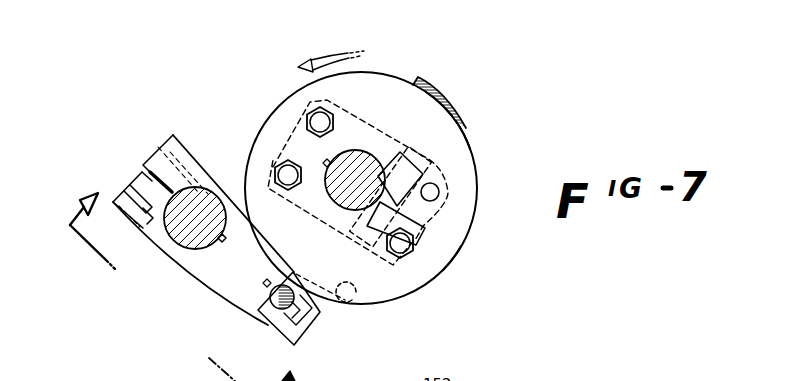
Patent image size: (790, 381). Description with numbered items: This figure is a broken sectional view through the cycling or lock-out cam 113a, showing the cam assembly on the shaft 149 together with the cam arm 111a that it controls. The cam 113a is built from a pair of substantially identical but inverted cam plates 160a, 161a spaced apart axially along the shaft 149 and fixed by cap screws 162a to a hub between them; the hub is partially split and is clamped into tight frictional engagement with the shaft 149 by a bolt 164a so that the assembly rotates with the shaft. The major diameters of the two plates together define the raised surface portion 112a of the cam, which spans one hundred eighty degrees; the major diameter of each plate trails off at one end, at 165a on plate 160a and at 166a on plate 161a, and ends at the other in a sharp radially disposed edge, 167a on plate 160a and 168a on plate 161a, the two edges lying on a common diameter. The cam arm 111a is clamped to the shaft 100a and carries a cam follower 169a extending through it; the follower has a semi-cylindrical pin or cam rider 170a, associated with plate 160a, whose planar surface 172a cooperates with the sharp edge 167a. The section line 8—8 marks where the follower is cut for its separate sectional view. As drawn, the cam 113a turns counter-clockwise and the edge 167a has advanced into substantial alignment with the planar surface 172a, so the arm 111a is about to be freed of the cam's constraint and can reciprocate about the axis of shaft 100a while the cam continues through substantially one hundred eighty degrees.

The section line 8- 8 is at (67, 237).
The shaft 100a is at (203, 191).
The cam arm 111a is at (191, 266).
The raised surface portion 112a is at (452, 259).
The cycling cam 113a is at (470, 123).
The shaft 149 is at (366, 157).
The cam plate 160a is at (470, 207).
The cam plate 161a is at (431, 90).
The cap screws 162a is at (308, 117).
The bolt 164a is at (425, 160).
The trailing end of major diameter 165a is at (443, 101).
The trailing end of major diameter 166a is at (356, 299).
The sharp radially disposed edge 167a is at (292, 276).
The sharp radially disposed edge 168a is at (414, 76).
The cam follower 169a is at (262, 294).
The pin or cam rider 170a is at (281, 310).
The planar surface 172a is at (278, 326).